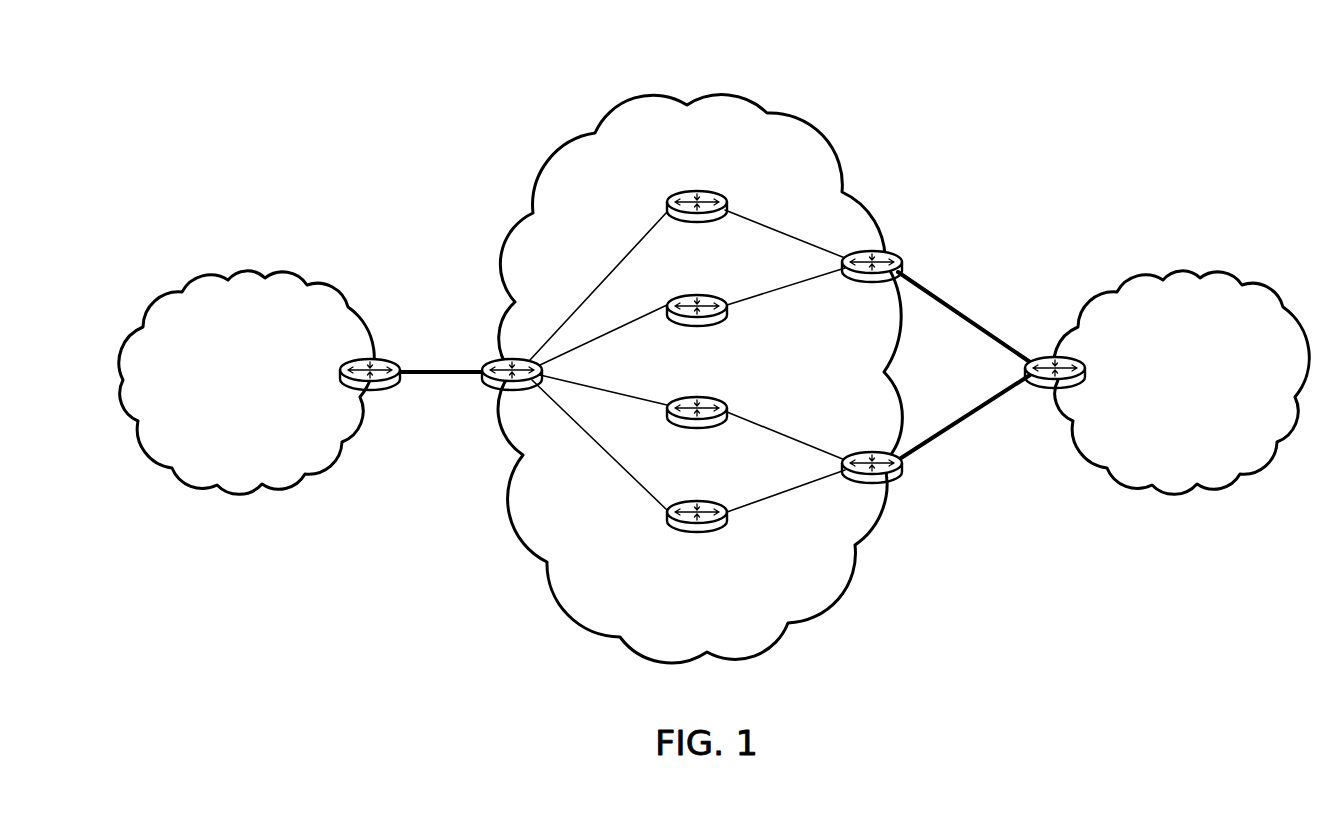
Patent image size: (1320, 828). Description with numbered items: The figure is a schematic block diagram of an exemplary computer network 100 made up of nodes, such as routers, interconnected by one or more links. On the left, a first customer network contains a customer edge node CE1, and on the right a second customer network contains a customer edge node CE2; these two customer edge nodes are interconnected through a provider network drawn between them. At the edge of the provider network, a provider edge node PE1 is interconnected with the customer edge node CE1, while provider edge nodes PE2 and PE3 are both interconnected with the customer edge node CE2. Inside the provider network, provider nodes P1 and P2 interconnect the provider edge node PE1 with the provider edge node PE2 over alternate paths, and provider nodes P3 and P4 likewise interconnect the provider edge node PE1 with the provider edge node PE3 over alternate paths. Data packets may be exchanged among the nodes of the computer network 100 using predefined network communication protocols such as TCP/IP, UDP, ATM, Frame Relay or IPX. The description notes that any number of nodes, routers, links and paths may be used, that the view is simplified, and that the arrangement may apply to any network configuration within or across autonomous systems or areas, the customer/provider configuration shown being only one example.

The computer network 100 is at (714, 343).
The customer edge node CE1 is at (340, 387).
The customer edge node CE2 is at (1085, 392).
The provider edge node PE1 is at (488, 354).
The provider edge node PE2 is at (905, 256).
The provider edge node PE3 is at (901, 487).
The provider node P1 is at (723, 228).
The provider node P2 is at (723, 331).
The provider node P3 is at (723, 433).
The provider node P4 is at (723, 536).